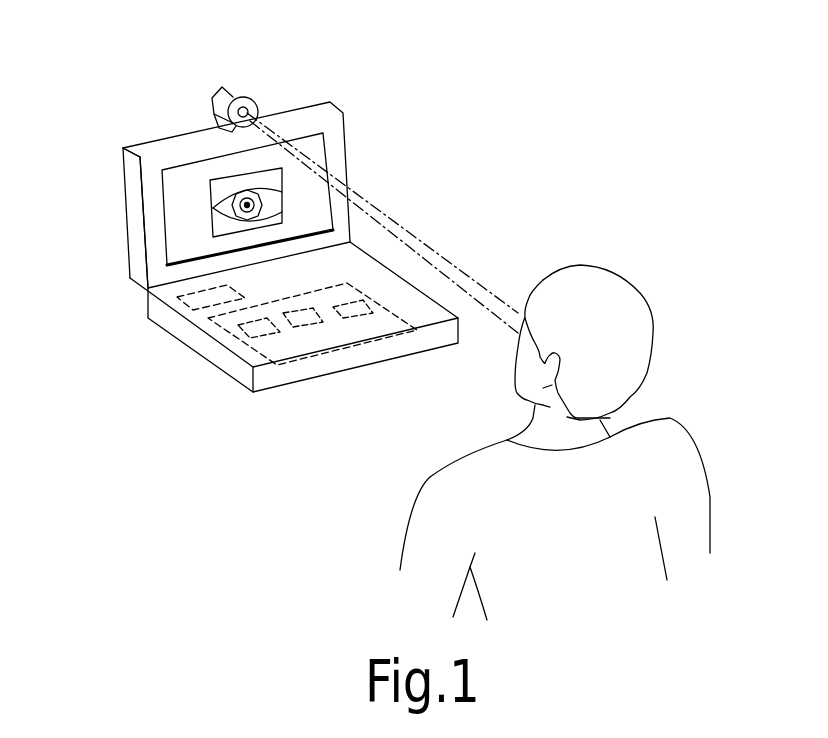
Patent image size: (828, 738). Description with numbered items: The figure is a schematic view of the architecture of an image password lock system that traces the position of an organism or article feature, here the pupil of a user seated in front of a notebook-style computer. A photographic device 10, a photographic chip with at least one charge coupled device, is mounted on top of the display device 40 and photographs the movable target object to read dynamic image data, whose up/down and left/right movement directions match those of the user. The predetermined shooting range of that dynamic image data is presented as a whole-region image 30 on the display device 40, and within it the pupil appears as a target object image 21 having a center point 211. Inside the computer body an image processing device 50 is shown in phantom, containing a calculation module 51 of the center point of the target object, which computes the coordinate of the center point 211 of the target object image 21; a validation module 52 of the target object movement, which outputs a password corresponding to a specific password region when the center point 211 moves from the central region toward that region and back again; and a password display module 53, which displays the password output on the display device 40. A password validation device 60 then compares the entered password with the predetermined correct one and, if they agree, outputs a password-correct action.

The photographic device 10 is at (235, 87).
The target object image 21 is at (249, 204).
The center point of the target object image 211 is at (254, 206).
The whole-region image 30 is at (173, 245).
The display device 40 is at (172, 191).
The image processing device 50 is at (293, 372).
The calculation module of the center point of the target object 51 is at (243, 332).
The validation module of the target object movement 52 is at (335, 335).
The password display module 53 is at (370, 317).
The password validation device 60 is at (148, 318).